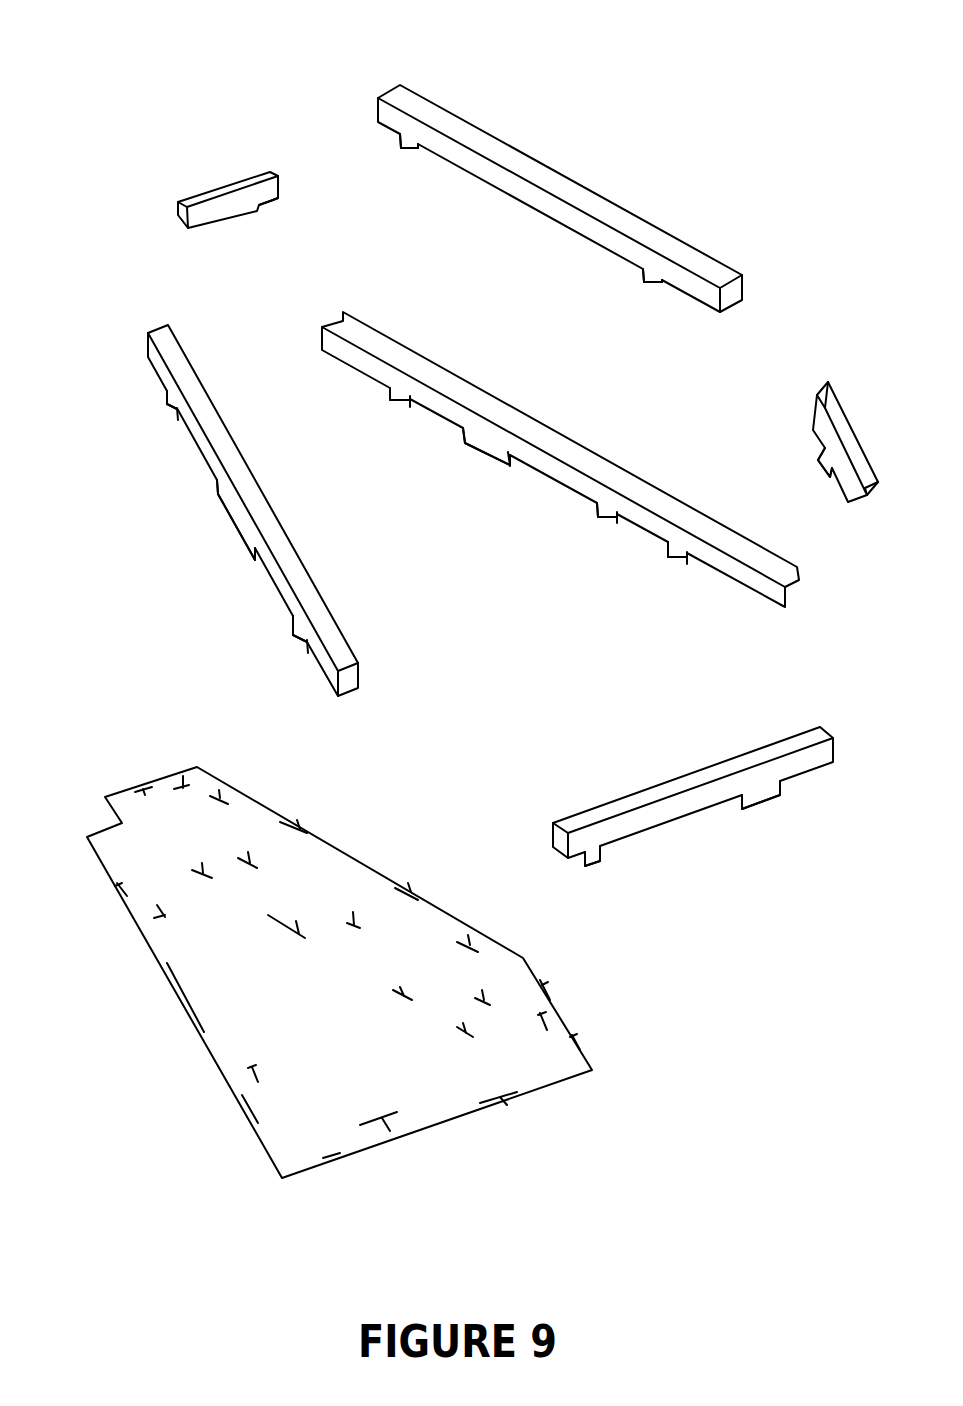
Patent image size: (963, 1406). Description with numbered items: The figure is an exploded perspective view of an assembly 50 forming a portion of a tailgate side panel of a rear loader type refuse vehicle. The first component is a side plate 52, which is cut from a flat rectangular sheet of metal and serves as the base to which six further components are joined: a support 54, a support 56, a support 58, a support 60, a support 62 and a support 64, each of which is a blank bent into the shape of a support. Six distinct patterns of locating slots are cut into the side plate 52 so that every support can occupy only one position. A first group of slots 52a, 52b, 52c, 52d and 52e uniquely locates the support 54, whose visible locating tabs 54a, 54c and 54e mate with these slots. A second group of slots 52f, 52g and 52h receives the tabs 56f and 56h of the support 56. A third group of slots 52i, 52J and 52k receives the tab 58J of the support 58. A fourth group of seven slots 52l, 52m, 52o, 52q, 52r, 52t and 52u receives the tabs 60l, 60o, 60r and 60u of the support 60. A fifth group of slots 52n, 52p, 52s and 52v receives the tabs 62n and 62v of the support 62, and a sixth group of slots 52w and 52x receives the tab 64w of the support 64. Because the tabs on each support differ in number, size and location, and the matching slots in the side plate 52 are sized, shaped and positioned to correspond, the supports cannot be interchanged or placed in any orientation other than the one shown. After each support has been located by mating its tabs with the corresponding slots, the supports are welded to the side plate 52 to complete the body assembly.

The assembly 50 is at (537, 83).
The side plate 52 is at (199, 1044).
The slot 52a is at (116, 890).
The slot 52b is at (156, 918).
The slot 52c is at (169, 988).
The slot 52d is at (247, 1076).
The slot 52e is at (243, 1119).
The slot 52f is at (340, 1167).
The slot 52g is at (389, 1129).
The slot 52h is at (508, 1111).
The slot 52i is at (588, 1043).
The slot 52J is at (558, 1013).
The slot 52k is at (556, 982).
The slot 52l is at (456, 1034).
The slot 52m is at (488, 996).
The slot 52n is at (478, 934).
The slot 52o is at (393, 1002).
The slot 52p is at (414, 882).
The slot 52q is at (356, 909).
The slot 52r is at (287, 945).
The slot 52s is at (301, 817).
The slot 52t is at (253, 852).
The slot 52u is at (205, 857).
The slot 52v is at (221, 786).
The slot 52w is at (183, 770).
The slot 52x is at (136, 782).
The support 54 is at (148, 364).
The tab 54a is at (166, 411).
The tab 54c is at (218, 508).
The tab 54e is at (293, 632).
The support 56 is at (728, 754).
The tab 56f is at (603, 863).
The tab 56h is at (771, 802).
The support 58 is at (862, 434).
The tab 58J is at (816, 463).
The support 60 is at (498, 395).
The tab 60l is at (672, 559).
The tab 60o is at (601, 521).
The tab 60r is at (486, 454).
The tab 60u is at (392, 403).
The support 62 is at (572, 169).
The tab 62n is at (658, 290).
The tab 62v is at (418, 159).
The support 64 is at (213, 185).
The tab 64w is at (284, 214).